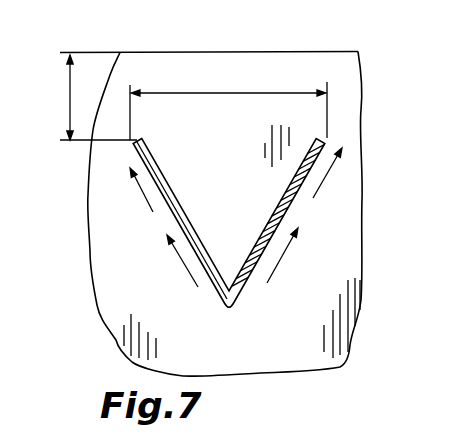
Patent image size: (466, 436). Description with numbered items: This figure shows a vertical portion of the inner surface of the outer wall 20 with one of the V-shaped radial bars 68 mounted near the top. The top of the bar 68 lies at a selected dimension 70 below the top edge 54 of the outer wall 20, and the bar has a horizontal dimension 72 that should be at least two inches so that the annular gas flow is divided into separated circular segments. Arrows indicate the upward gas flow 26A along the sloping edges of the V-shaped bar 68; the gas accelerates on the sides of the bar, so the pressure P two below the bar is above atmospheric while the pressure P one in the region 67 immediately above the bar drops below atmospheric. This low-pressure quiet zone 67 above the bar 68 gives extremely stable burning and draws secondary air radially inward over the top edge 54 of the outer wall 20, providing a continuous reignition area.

The outer wall 20 is at (78, 230).
The top edge of the outer wall 54 is at (281, 51).
The V-shaped score / crease 67 is at (229, 138).
The radial bar 68 is at (293, 205).
The upward gas flow past the bars 26A is at (182, 258).
The horizontal dimension of the bars 72 is at (185, 93).
The selected dimension below the top edge 70 is at (71, 97).